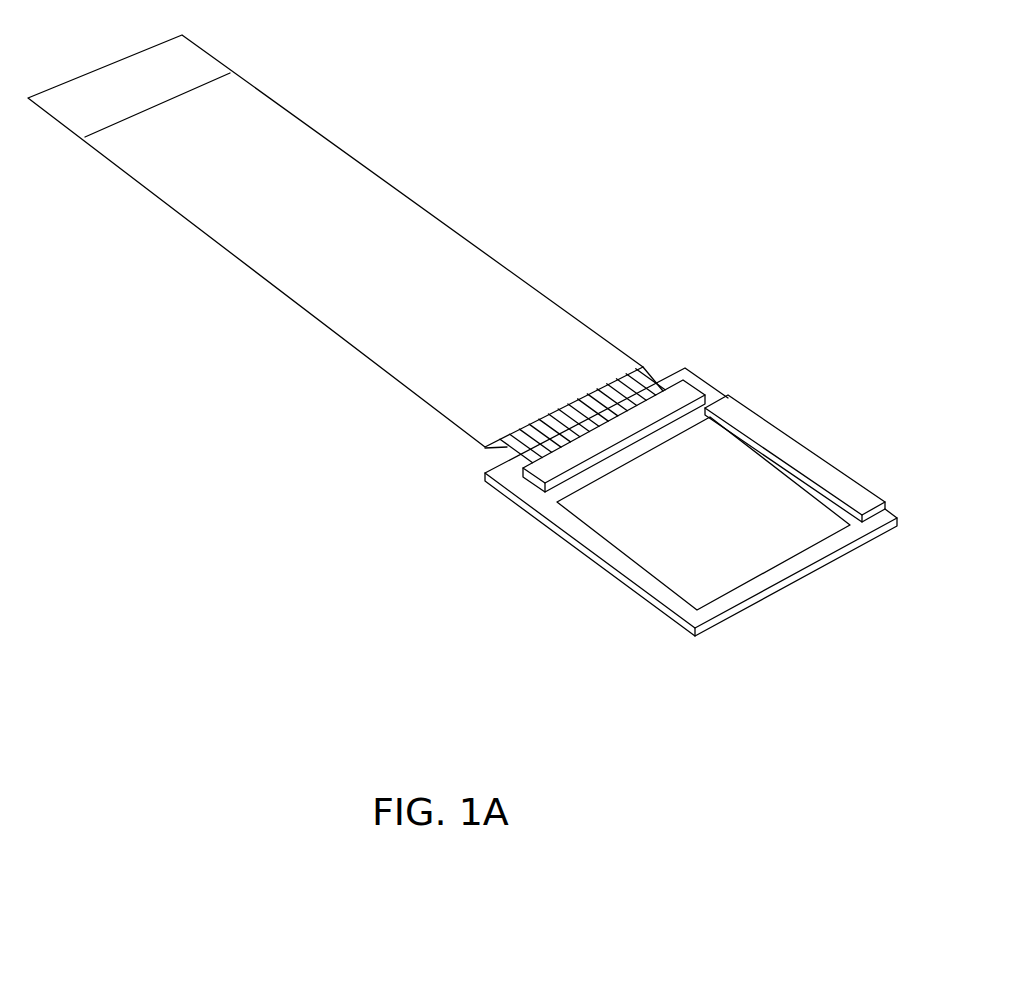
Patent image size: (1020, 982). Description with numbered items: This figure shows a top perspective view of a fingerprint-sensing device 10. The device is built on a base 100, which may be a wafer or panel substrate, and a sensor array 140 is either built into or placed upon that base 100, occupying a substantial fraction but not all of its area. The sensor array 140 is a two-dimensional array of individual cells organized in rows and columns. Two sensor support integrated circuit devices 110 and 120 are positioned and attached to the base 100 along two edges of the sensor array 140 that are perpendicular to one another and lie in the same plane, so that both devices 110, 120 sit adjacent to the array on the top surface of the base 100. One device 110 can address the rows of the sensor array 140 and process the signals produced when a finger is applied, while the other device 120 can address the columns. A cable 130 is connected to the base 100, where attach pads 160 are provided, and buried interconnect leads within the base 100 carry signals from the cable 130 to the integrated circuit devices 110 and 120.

The fingerprint-sensing device 10 is at (765, 273).
The base 100 is at (712, 609).
The sensor support integrated circuit device 110 is at (804, 458).
The sensor support integrated circuit device 120 is at (682, 396).
The cable 130 is at (560, 332).
The sensor array 140 is at (758, 540).
The attach pads 160 is at (505, 449).